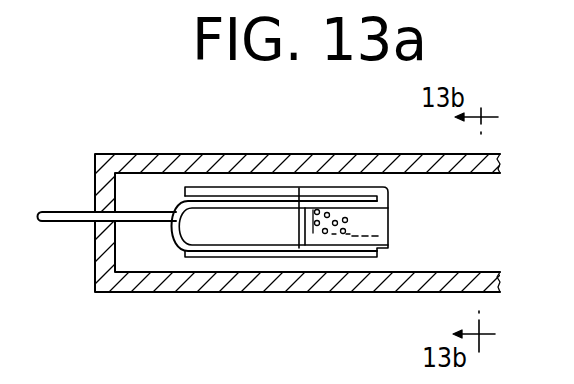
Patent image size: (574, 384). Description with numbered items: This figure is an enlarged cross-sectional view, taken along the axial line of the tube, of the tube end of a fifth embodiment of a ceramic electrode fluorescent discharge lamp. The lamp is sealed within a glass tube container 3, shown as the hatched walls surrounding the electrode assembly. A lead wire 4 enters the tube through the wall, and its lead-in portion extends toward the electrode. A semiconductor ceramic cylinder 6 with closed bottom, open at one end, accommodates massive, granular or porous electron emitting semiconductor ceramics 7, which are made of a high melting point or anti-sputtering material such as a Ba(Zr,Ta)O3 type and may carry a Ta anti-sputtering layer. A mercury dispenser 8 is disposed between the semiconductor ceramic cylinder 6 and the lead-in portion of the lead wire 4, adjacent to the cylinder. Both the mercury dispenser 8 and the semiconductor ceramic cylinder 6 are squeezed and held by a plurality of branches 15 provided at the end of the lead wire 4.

The glass tube container 3 is at (387, 157).
The lead wire 4 is at (58, 225).
The semiconductor ceramic cylinder with closed bottom 6 is at (353, 240).
The electron emitting semiconductor ceramics 7 is at (352, 216).
The mercury dispenser 8 is at (232, 226).
The branches 15 is at (252, 193).